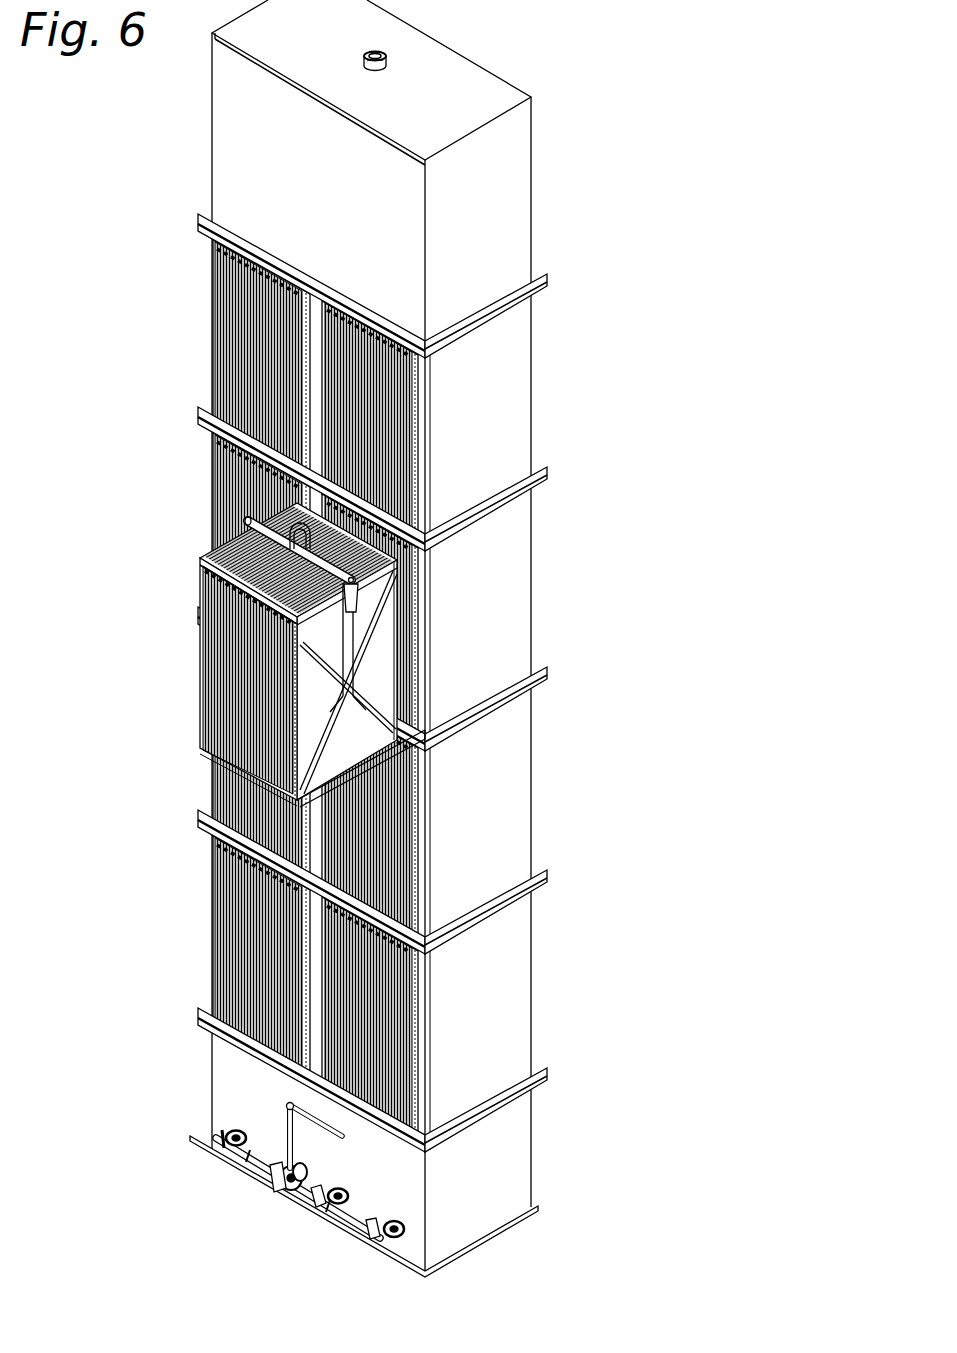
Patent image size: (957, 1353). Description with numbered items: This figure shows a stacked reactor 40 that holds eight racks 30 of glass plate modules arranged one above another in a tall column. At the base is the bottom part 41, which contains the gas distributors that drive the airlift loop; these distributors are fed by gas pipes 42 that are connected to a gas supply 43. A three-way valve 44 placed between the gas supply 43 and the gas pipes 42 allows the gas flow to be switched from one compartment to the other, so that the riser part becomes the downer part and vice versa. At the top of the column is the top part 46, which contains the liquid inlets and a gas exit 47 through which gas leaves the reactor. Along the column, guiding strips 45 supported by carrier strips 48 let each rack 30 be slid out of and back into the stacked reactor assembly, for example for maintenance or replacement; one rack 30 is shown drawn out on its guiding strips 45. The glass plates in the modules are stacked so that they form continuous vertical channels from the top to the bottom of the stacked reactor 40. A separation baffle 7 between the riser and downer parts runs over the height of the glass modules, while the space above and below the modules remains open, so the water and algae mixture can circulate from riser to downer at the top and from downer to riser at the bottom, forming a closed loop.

The separation baffle 7 is at (393, 547).
The rack 30 is at (312, 698).
The stacked reactor 40 is at (180, 472).
The bottom part 41 is at (492, 1152).
The gas pipes 42 is at (256, 1155).
The gas supply 43 is at (287, 1128).
The three-way valve 44 is at (270, 1186).
The guiding strips 45 is at (373, 767).
The top part 46 is at (481, 178).
The gas exit 47 is at (383, 54).
The carrier strips 48 is at (380, 669).